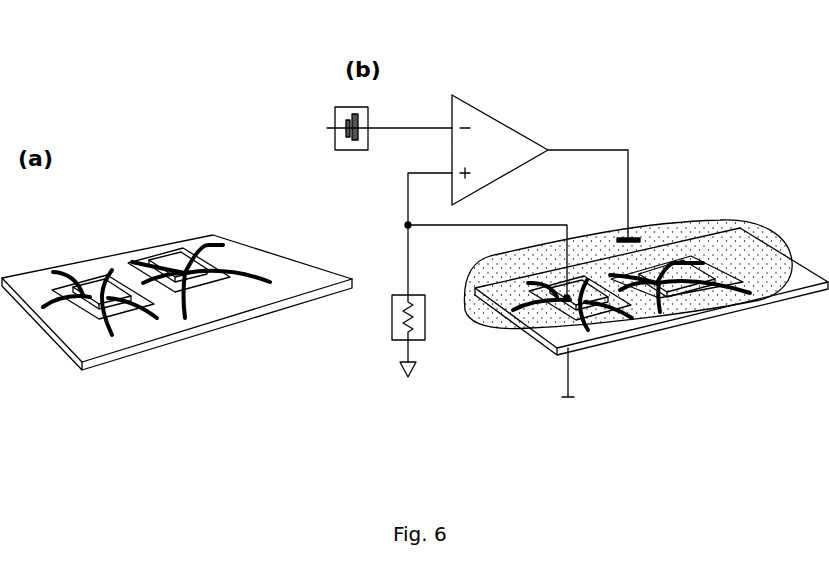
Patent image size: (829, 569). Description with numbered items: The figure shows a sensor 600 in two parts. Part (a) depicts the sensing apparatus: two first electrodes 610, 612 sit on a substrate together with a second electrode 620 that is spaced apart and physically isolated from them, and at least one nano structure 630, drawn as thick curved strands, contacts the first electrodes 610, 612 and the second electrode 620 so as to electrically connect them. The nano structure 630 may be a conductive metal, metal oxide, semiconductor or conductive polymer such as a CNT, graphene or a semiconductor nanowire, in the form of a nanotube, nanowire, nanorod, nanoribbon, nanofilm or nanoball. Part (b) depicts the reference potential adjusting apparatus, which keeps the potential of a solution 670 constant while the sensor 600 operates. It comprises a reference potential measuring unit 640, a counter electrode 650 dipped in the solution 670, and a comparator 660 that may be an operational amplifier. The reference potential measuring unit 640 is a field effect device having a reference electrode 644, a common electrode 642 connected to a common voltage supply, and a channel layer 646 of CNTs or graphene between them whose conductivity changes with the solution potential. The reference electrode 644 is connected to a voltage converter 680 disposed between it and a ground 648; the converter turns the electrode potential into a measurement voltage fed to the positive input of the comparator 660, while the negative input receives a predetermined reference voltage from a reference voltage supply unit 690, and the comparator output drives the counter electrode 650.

The sensor 600 is at (145, 143).
The first electrode 610 is at (92, 296).
The first electrode 612 is at (182, 268).
The second electrode 620 is at (247, 256).
The nano structure 630 is at (110, 320).
The reference potential measuring unit 640 is at (520, 350).
The common electrode 642 is at (587, 333).
The reference electrode 644 is at (571, 287).
The channel layer 646 is at (612, 319).
The ground 648 is at (400, 370).
The counter electrode 650 is at (635, 237).
The comparator 660 is at (503, 122).
The solution 670 is at (738, 232).
The voltage converter 680 is at (392, 312).
The reference voltage supply unit 690 is at (335, 118).